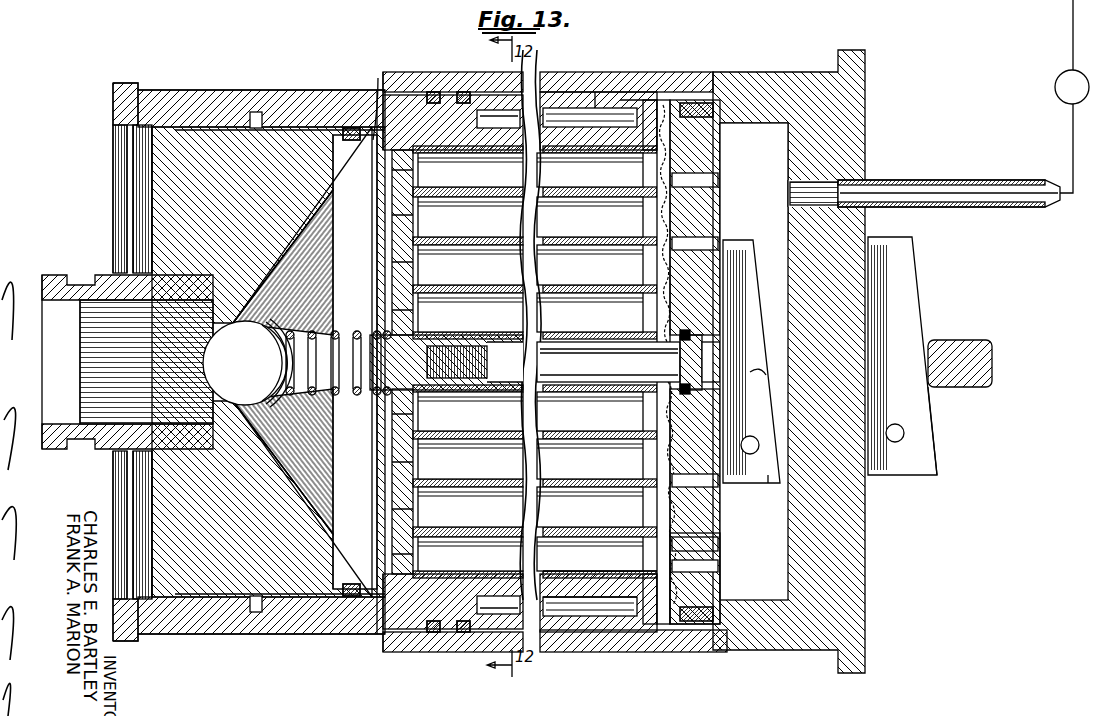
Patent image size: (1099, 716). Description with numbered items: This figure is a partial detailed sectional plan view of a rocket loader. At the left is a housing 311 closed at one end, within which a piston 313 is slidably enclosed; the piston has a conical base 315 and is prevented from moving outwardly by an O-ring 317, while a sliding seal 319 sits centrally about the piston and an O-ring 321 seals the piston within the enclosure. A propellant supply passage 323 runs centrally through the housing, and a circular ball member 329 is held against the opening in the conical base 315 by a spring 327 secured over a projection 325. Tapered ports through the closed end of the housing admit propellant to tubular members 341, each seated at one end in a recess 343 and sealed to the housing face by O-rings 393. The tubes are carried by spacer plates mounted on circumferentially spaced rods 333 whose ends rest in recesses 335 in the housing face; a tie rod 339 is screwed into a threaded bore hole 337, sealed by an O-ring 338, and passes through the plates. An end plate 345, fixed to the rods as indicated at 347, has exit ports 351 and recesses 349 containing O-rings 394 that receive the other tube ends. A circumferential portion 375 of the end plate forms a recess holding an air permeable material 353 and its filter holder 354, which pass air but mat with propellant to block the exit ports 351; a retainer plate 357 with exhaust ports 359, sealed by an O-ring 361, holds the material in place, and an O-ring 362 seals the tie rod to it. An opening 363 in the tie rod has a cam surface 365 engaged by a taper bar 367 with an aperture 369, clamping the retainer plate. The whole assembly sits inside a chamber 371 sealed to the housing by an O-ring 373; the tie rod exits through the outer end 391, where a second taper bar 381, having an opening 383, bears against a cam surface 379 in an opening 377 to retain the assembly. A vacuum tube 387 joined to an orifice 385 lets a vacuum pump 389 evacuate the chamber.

The housing 311 is at (226, 92).
The piston 313 is at (50, 275).
The conical base 315 is at (295, 472).
The O-ring 317 is at (146, 112).
The sliding seal 319 is at (258, 110).
The O-ring 321 is at (350, 128).
The propellant supply passage 323 is at (88, 275).
The projection 325 is at (357, 340).
The spring 327 is at (312, 340).
The circular ball member / tapered ports 329 is at (292, 335).
The rods 333 is at (557, 145).
The recesses 335 is at (472, 105).
The threaded bore hole 337 is at (447, 348).
The O-ring 338 is at (474, 346).
The tie rod 339 is at (573, 345).
The tubular members 341 is at (567, 140).
The recess 343 is at (458, 148).
The end plate 345 is at (645, 100).
The securing point 347 is at (615, 140).
The recesses 349 is at (618, 586).
The exit ports 351 is at (663, 128).
The air permeable material 353 is at (722, 547).
The filter holder 354 is at (678, 335).
The retainer plate 357 is at (722, 568).
The exhaust ports 359 is at (714, 210).
The O-ring 361 is at (700, 103).
The O-ring 362 is at (690, 340).
The opening 363 is at (770, 336).
The cam surface 365 is at (757, 378).
The taper bar 367 is at (770, 484).
The aperture 369 is at (748, 455).
The chamber 371 is at (598, 95).
The O-ring 373 is at (462, 632).
The circumferential portion 375 is at (725, 640).
The opening 377 is at (928, 345).
The cam surface 379 is at (922, 388).
The second taper bar 381 is at (925, 477).
The opening 383 is at (895, 444).
The orifice 385 is at (840, 185).
The vacuum tube 387 is at (918, 182).
The vacuum pump 389 is at (1055, 85).
The outer end of the chamber 391 is at (860, 672).
The O-rings 393 is at (378, 632).
The O-rings 394 is at (630, 572).